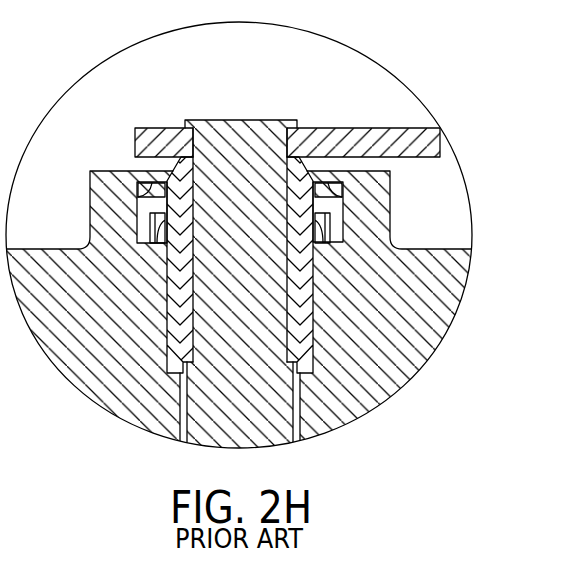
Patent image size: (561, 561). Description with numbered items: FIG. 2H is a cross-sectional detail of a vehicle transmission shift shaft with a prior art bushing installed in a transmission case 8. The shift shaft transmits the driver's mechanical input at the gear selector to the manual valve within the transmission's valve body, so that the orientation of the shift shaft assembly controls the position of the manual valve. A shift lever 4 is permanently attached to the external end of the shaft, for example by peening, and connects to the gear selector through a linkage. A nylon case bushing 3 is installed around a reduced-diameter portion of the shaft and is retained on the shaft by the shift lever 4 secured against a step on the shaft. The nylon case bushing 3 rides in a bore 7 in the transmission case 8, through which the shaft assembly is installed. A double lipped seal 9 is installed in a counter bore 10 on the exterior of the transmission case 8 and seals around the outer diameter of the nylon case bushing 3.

The nylon case bushing 3 is at (315, 256).
The shift lever 4 is at (323, 128).
The bore 7 is at (315, 294).
The transmission case 8 is at (407, 371).
The double lipped seal 9 is at (345, 208).
The counter bore 10 is at (343, 193).